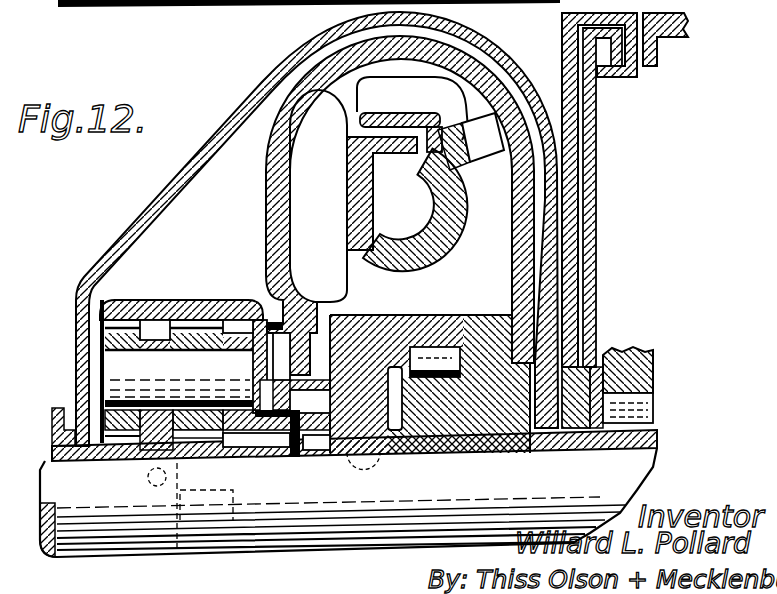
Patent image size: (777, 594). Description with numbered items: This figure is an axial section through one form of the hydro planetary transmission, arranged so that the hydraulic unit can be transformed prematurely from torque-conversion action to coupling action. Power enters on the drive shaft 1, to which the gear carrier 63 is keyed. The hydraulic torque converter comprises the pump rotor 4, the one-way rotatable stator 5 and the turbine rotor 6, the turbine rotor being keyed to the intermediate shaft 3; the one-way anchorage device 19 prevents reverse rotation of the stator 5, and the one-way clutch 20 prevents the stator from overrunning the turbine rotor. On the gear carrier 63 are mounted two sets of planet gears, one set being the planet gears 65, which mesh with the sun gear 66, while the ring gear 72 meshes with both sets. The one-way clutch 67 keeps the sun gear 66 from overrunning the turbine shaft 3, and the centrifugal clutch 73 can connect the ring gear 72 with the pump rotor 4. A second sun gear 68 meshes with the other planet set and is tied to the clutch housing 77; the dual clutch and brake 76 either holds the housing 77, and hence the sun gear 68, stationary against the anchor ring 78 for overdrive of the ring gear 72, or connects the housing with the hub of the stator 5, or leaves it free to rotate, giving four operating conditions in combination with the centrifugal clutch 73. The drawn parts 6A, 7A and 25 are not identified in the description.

The drive shaft 1 is at (138, 8).
The intermediate shaft 3 is at (640, 463).
The pump rotor 4 is at (307, 180).
The one-way rotatable stator 5 is at (483, 150).
The turbine rotor 6 is at (452, 272).
The hub 6A is at (132, 425).
The roller 7A is at (298, 417).
The one-way anchorage device 19 is at (653, 407).
The one-way clutch 20 is at (428, 357).
The casing 25 is at (261, 72).
The gear carrier 63 is at (236, 335).
The planet gears 65 is at (203, 427).
The sun gear 66 is at (225, 437).
The one-way clutch 67 is at (322, 445).
The sun gear 68 is at (133, 447).
The ring gear 72 is at (120, 312).
The centrifugal clutch 73 is at (283, 350).
The dual clutch and brake 76 is at (553, 30).
The clutch housing 77 is at (594, 214).
The anchor ring 78 is at (655, 58).